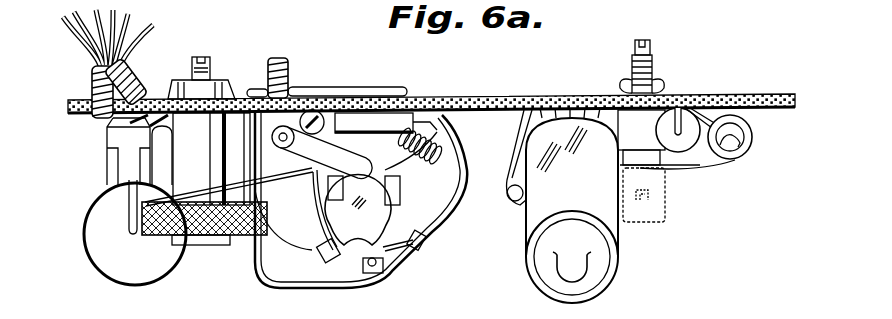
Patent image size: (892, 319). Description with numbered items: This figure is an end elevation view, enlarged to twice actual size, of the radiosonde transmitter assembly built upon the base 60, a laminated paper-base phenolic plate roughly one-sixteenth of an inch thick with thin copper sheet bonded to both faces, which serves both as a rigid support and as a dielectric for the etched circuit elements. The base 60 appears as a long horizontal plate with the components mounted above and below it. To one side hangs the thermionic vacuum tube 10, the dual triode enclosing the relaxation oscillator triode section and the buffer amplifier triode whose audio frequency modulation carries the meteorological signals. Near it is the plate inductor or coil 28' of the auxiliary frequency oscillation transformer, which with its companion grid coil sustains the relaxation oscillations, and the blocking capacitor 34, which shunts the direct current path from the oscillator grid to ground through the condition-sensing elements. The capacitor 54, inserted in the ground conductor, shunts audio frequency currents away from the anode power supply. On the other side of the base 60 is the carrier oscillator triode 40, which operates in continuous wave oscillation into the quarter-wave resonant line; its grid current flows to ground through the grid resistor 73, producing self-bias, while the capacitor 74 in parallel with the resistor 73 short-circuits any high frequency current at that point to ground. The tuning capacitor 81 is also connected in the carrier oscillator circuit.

The thermionic vacuum tube 10 is at (439, 236).
The plate inductor or coil 28' is at (204, 248).
The blocking capacitor 34 is at (86, 233).
The triode 40 is at (600, 185).
The capacitor 54 is at (240, 152).
The base 60 is at (508, 100).
The grid resistor 73 is at (665, 136).
The capacitor 74 is at (755, 138).
The tuning capacitor 81 is at (660, 182).